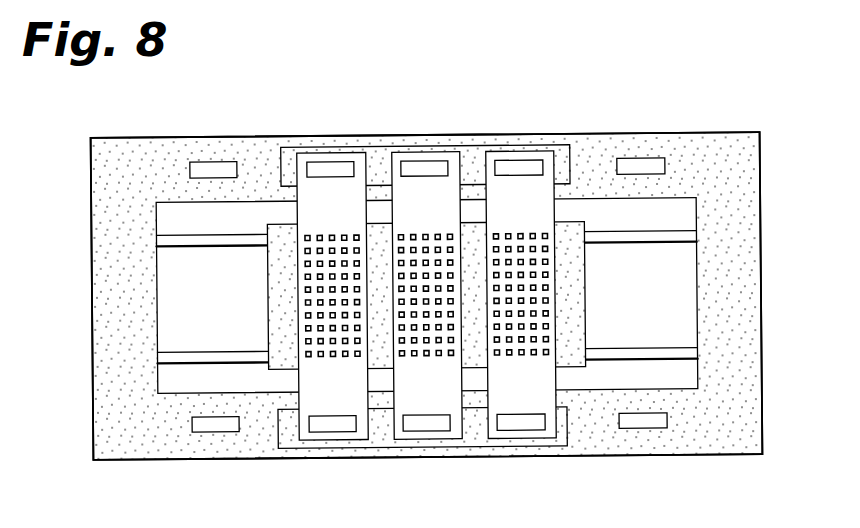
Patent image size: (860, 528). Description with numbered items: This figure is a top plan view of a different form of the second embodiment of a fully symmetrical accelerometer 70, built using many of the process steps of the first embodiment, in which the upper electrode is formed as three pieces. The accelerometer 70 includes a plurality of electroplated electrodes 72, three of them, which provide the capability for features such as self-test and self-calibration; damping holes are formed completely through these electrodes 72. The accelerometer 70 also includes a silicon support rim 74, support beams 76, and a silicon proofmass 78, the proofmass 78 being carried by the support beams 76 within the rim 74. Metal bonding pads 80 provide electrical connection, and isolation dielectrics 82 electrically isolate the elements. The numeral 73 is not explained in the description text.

The accelerometer 70 is at (626, 92).
The electroplated electrodes 72 is at (403, 147).
The solder bump interconnects 73 is at (508, 328).
The silicon support rim 74 is at (717, 132).
The support beams 76 is at (222, 352).
The silicon proofmass 78 is at (267, 258).
The metal bonding pads 80 is at (313, 158).
The isolation dielectrics 82 is at (572, 150).